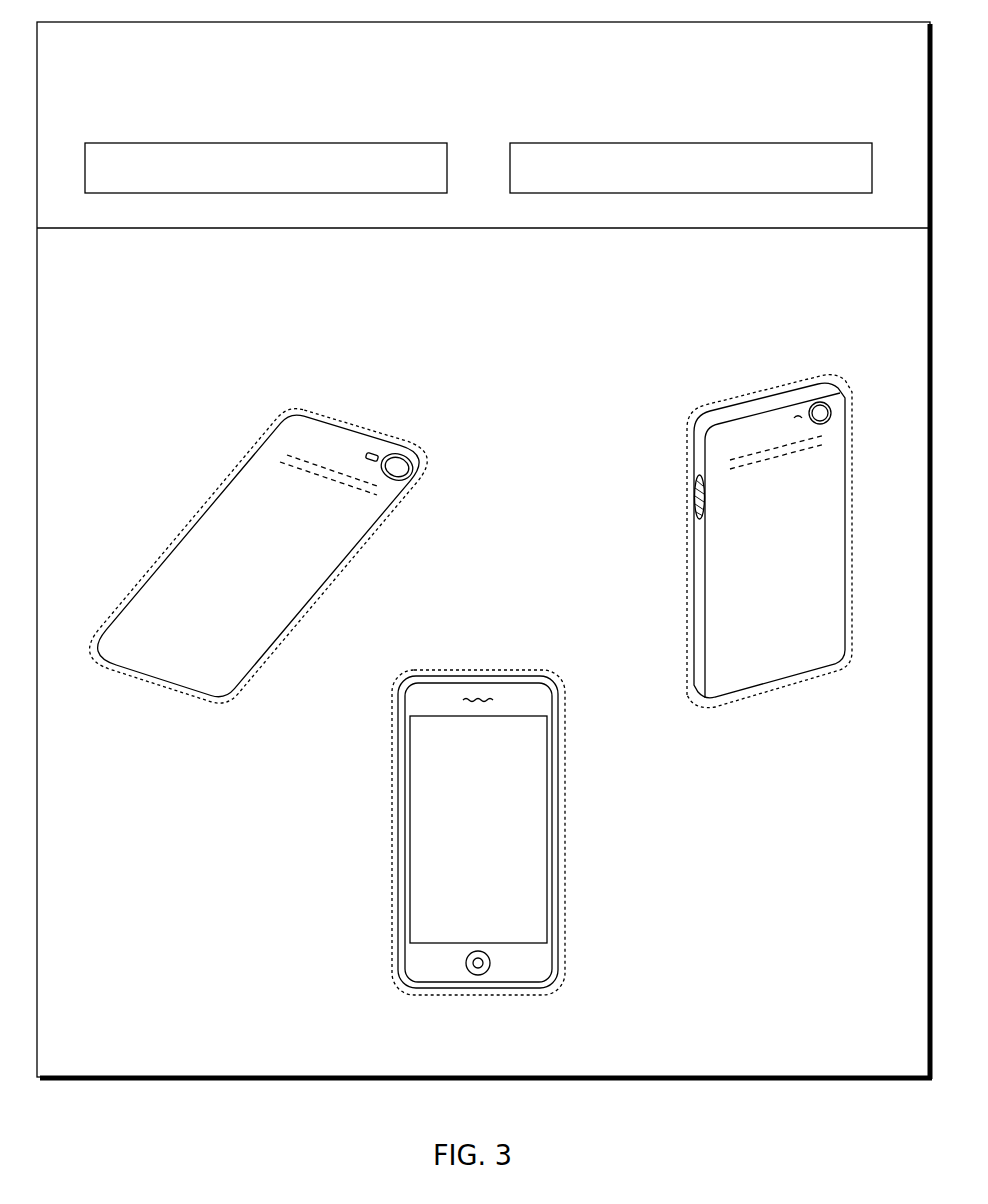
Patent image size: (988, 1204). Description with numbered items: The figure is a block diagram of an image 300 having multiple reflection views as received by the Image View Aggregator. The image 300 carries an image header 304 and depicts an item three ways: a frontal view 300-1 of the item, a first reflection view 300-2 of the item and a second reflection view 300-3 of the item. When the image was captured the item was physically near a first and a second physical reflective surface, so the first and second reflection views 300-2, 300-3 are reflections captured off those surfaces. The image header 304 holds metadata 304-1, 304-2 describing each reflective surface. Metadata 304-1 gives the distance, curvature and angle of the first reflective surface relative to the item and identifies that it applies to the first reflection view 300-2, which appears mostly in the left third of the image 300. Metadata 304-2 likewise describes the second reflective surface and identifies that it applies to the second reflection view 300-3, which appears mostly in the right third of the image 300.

The image 300 is at (116, 325).
The image header 304 is at (132, 108).
The metadata 304-1 is at (355, 143).
The metadata 304-2 is at (803, 143).
The frontal view 300-1 is at (512, 655).
The first reflection view 300-2 is at (366, 404).
The second reflection view 300-3 is at (774, 372).